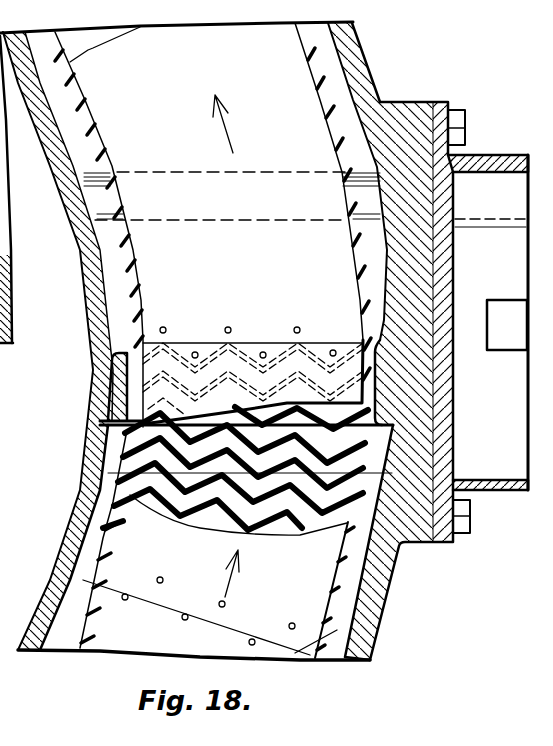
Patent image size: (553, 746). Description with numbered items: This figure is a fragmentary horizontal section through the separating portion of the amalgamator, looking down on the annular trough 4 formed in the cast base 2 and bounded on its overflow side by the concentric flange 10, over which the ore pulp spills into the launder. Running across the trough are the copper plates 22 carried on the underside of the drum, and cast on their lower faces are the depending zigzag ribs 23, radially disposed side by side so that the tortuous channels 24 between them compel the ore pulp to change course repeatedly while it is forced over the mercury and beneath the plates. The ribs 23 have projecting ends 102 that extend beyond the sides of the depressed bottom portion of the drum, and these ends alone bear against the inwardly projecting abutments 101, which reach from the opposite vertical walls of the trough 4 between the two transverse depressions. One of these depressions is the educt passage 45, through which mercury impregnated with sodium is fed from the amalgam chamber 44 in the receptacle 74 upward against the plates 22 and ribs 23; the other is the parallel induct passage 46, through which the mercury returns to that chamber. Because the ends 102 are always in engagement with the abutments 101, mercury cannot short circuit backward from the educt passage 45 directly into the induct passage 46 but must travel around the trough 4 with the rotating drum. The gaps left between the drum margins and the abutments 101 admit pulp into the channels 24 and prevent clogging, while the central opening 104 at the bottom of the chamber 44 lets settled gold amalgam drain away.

The base 2 is at (350, 63).
The annular trough 4 is at (353, 108).
The concentric flange 10 is at (78, 533).
The copper plates 22 is at (334, 608).
The zigzag ribs 23 is at (220, 505).
The channels 24 is at (125, 460).
The amalgam chamber 44 is at (488, 322).
The educt passage 45 is at (360, 200).
The induct passage 46 is at (383, 448).
The receptacle 74 is at (515, 322).
The abutments 101 is at (123, 387).
The projecting ends 102 is at (140, 337).
The central opening 104 is at (507, 325).